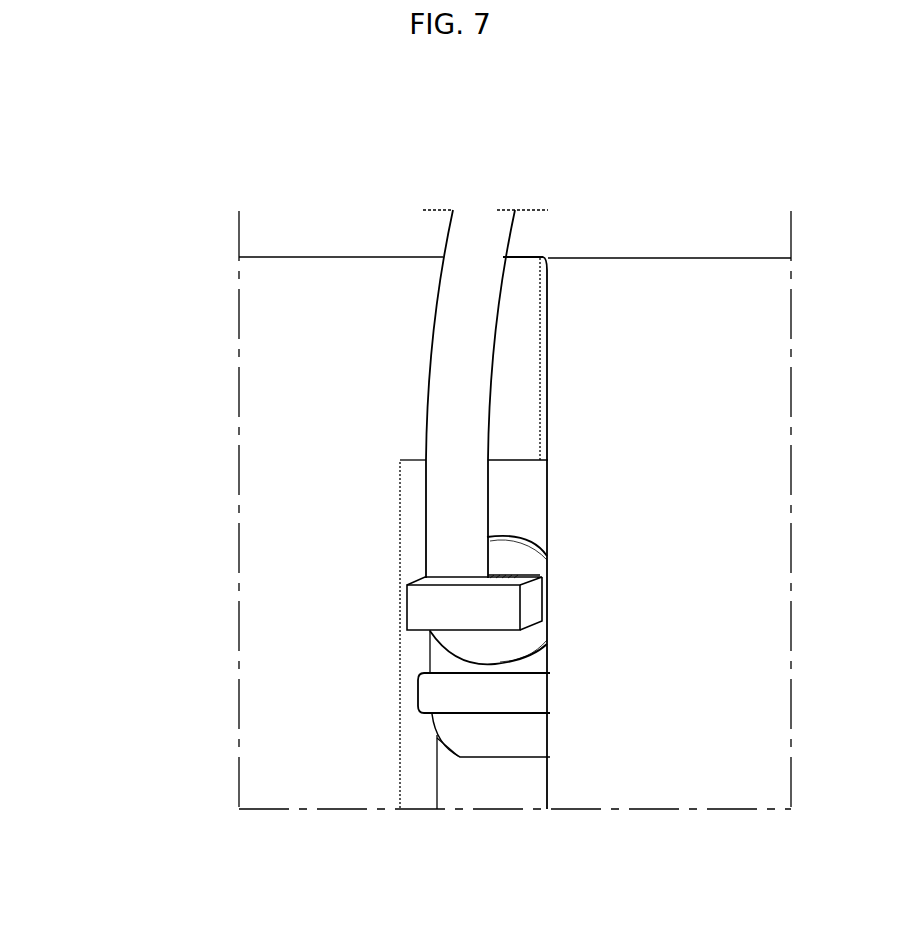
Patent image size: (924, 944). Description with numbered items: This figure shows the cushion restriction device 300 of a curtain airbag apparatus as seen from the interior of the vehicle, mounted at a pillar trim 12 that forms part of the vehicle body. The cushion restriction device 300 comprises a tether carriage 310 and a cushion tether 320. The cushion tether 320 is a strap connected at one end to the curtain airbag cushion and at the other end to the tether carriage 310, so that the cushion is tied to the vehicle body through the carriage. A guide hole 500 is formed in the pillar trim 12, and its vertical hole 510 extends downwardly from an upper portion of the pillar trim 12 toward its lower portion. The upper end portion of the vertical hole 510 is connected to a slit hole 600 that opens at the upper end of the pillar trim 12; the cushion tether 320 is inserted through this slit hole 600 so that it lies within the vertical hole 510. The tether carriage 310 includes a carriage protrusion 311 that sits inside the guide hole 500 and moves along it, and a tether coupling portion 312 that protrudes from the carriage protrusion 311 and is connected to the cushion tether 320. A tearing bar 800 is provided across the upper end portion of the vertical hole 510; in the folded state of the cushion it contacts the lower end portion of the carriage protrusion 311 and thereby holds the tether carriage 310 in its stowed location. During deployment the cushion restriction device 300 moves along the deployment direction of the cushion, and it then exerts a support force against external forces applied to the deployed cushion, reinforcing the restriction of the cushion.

The pillar trim 12 is at (276, 502).
The cushion restriction device 300 is at (427, 378).
The tether carriage 310 is at (514, 505).
The carriage protrusion 311 is at (505, 562).
The tether coupling portion 312 is at (436, 607).
The cushion tether 320 is at (484, 229).
The guide hole 500 is at (521, 772).
The vertical hole 510 is at (482, 788).
The slit hole 600 is at (541, 337).
The tearing bar 800 is at (432, 691).